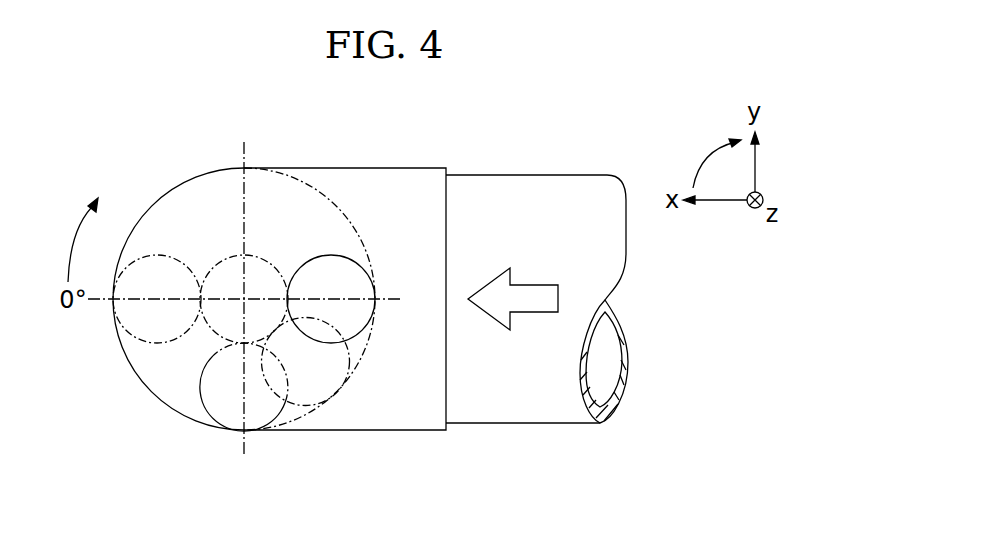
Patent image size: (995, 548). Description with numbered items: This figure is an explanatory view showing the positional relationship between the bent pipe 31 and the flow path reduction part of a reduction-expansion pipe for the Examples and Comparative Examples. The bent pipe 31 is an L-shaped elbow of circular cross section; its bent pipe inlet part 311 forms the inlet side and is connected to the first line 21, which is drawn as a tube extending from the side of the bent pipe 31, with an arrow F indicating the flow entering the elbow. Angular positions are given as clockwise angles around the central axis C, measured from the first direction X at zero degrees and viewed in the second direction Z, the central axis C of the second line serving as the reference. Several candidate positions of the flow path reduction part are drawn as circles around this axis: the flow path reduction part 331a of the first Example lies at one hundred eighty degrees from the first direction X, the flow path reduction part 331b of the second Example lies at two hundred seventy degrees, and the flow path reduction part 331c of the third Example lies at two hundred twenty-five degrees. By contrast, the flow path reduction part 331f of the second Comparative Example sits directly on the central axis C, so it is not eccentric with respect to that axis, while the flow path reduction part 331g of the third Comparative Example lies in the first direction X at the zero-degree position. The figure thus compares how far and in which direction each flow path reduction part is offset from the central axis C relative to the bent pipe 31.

The first line 21 is at (536, 193).
The bent pipe 31 is at (388, 168).
The bent pipe inlet part 311 is at (438, 298).
The flow path reduction part 331a is at (313, 255).
The flow path reduction part 331b is at (202, 392).
The flow path reduction part 331c is at (305, 405).
The flow path reduction part 331f is at (223, 259).
The flow path reduction part 331g is at (142, 340).
The central axis C is at (250, 308).
The force direction F is at (524, 299).